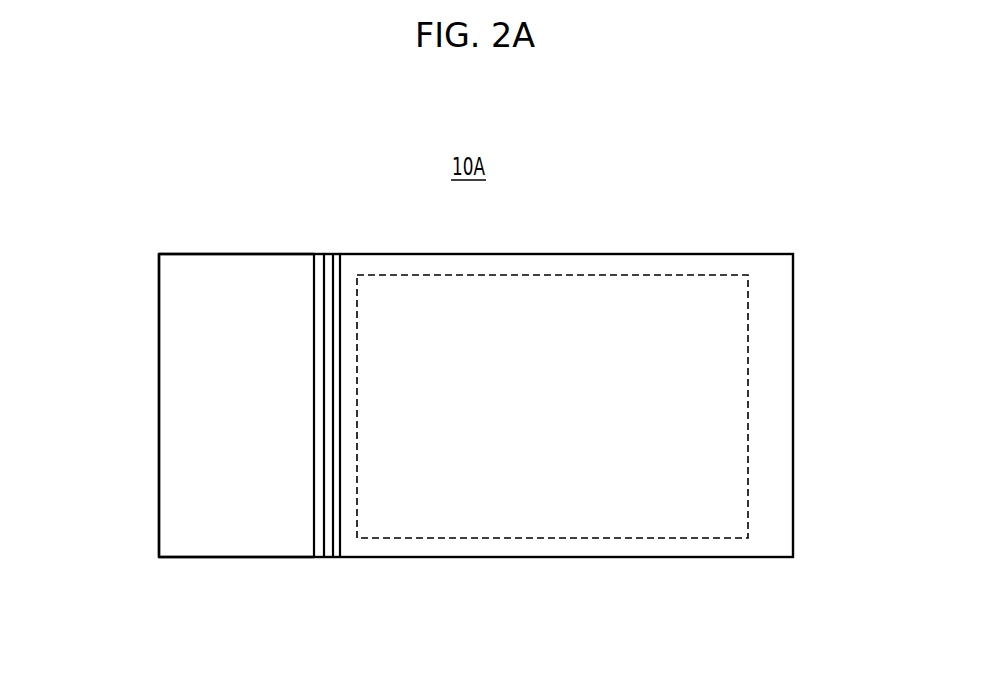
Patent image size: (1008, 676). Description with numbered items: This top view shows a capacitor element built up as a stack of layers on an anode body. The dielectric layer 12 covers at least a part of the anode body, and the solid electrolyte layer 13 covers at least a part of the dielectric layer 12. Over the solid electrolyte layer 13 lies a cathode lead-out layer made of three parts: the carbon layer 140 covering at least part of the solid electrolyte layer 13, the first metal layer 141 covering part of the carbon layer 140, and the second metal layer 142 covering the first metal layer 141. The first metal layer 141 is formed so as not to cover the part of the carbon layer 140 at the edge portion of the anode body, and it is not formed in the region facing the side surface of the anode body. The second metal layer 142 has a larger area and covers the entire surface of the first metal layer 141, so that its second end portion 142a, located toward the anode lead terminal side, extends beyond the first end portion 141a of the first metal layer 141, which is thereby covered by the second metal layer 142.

The dielectric layer 12 is at (195, 272).
The solid electrolyte layer 13 is at (318, 268).
The carbon layer 140 is at (333, 268).
The first metal layer 141 is at (622, 320).
The first end portion 141a is at (358, 389).
The second metal layer 142 is at (773, 396).
The second end portion 142a is at (340, 500).